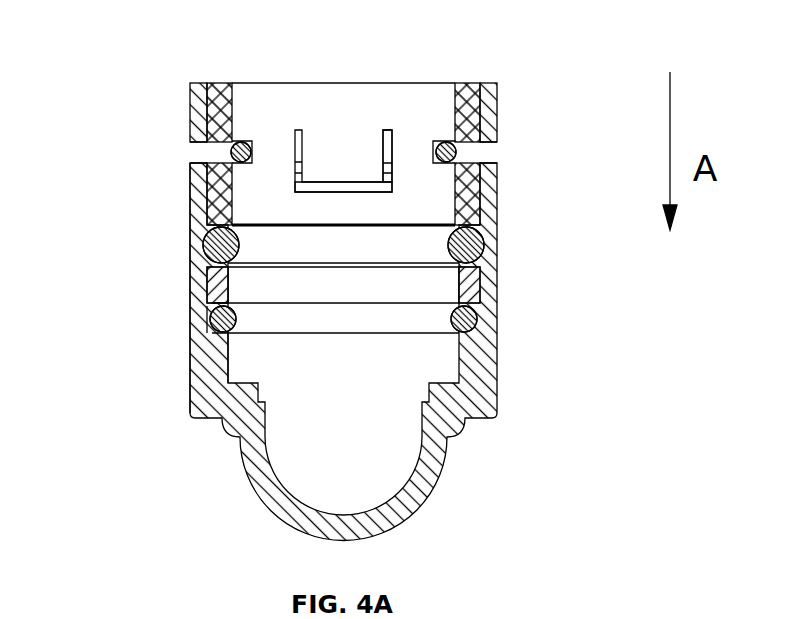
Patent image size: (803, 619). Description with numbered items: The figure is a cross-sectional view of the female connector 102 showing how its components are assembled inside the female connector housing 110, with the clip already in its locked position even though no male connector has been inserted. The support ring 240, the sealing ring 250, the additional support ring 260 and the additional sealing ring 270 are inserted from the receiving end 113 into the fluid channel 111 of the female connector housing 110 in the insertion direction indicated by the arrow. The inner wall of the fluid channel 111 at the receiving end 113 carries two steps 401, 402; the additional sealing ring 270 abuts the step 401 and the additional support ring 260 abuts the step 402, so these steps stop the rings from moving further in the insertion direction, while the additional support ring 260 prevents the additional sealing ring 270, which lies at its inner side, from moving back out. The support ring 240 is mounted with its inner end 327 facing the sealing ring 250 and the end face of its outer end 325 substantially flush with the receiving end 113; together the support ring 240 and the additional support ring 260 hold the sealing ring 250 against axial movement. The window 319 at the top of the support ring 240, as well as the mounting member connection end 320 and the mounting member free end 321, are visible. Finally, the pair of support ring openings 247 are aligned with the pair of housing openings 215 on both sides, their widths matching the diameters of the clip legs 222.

The female connector housing 110 is at (203, 430).
The fluid channel 111 is at (263, 103).
The receiving end 113 is at (490, 110).
The female connector 102 is at (195, 244).
The support ring 240 is at (223, 83).
The outer end 325 is at (468, 83).
The inner end 327 is at (484, 210).
The housing opening 215 is at (215, 150).
The clip leg 222 is at (240, 161).
The support ring opening 247 is at (222, 150).
The mounting member connection end 320 is at (340, 135).
The window 319 is at (389, 152).
The mounting member free end 321 is at (334, 179).
The sealing ring 250 is at (480, 233).
The additional support ring 260 is at (472, 293).
The additional sealing ring 270 is at (475, 335).
The step 401 is at (206, 350).
The step 402 is at (205, 312).